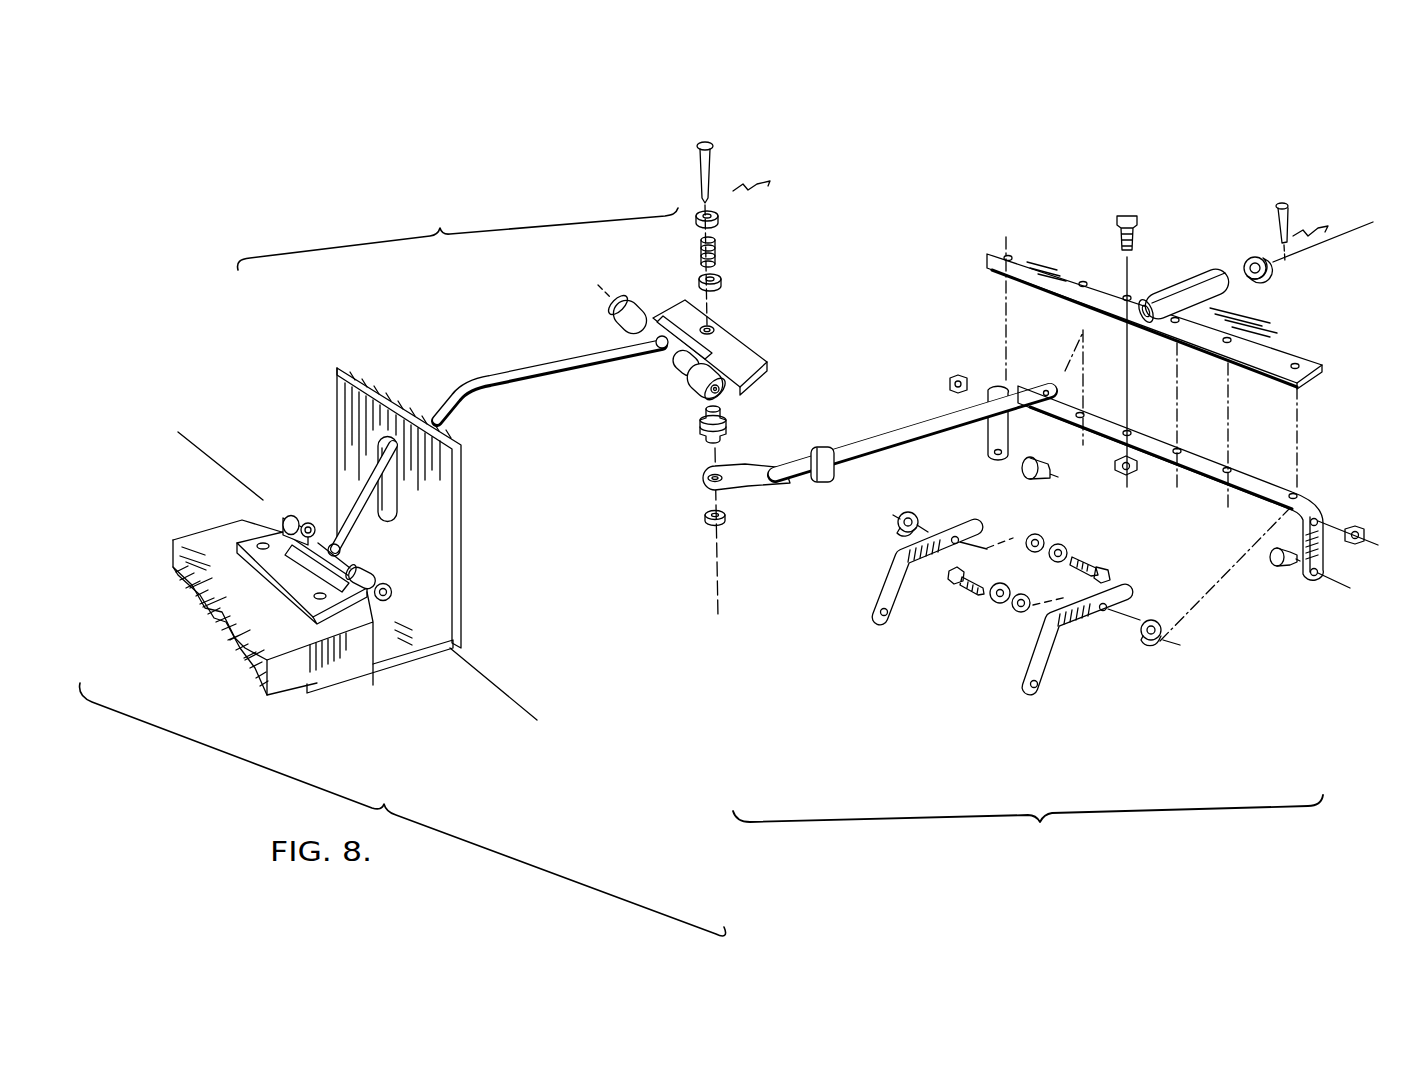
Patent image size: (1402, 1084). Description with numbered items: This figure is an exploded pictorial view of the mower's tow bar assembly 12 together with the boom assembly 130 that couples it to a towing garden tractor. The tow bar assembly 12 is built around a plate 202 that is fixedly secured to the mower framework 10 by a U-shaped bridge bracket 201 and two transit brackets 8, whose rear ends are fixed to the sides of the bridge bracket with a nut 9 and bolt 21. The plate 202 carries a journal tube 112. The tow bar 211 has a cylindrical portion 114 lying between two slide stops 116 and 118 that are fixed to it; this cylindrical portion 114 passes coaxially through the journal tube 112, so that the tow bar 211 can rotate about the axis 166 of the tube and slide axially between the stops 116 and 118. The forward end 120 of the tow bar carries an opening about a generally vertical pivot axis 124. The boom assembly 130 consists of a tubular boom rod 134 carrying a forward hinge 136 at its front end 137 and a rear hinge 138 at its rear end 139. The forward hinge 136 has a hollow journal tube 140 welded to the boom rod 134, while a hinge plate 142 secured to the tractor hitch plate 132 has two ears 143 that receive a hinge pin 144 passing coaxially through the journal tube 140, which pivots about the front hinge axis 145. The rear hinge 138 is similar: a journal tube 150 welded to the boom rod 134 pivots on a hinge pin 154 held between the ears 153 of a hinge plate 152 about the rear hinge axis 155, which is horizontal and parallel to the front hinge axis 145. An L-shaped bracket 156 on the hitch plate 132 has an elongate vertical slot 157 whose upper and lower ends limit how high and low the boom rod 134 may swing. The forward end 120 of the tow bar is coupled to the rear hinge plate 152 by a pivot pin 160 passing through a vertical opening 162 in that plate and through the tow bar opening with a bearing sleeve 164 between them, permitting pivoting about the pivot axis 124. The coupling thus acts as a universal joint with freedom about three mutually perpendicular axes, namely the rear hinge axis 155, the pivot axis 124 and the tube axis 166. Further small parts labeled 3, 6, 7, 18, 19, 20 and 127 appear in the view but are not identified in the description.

The bolt 3 is at (1127, 215).
The pin 6 is at (1318, 230).
The washer 7 is at (993, 606).
The transit brackets 8 is at (893, 575).
The nut 9 is at (1276, 570).
The framework 10 is at (1131, 477).
The tow bar assembly 12 is at (1055, 546).
The bolt 18 is at (962, 588).
The washer 19 is at (1016, 612).
The washer 20 is at (1150, 645).
The bolt 21 is at (1355, 525).
The journal tube 112 is at (1207, 260).
The cylindrical portion 114 is at (920, 432).
The slide stop 116 is at (1250, 258).
The slide stop 118 is at (825, 486).
The forward end 120 is at (705, 519).
The pivot axis 124 is at (718, 614).
The link arm 127 is at (703, 465).
The boom assembly 130 is at (458, 232).
The hitch plate 132 is at (288, 664).
The tubular boom rod 134 is at (478, 375).
The forward hinge 136 is at (280, 496).
The front end 137 is at (329, 524).
The rear hinge 138 is at (678, 324).
The rear end 139 is at (646, 368).
The journal tube 140 is at (348, 552).
The hinge plate 142 is at (262, 563).
The ears 143 is at (398, 584).
The hinge pin 144 is at (384, 601).
The front hinge axis 145 is at (504, 630).
The journal tube 150 is at (676, 368).
The hinge plate 152 is at (738, 349).
The ears 153 is at (614, 318).
The hinge pin 154 is at (735, 381).
The rear hinge axis 155 is at (733, 399).
The L-shaped bracket 156 is at (463, 505).
The elongate vertical slot 157 is at (398, 500).
The pivot pin 160 is at (692, 175).
The vertical opening 162 is at (710, 326).
The bearing sleeve 164 is at (690, 426).
The axis 166 is at (1345, 243).
The U-shaped bridge bracket 201 is at (990, 385).
The plate 202 is at (1061, 251).
The tow bar 211 is at (838, 435).